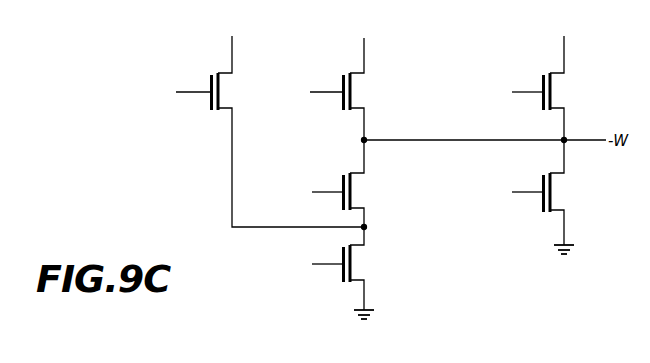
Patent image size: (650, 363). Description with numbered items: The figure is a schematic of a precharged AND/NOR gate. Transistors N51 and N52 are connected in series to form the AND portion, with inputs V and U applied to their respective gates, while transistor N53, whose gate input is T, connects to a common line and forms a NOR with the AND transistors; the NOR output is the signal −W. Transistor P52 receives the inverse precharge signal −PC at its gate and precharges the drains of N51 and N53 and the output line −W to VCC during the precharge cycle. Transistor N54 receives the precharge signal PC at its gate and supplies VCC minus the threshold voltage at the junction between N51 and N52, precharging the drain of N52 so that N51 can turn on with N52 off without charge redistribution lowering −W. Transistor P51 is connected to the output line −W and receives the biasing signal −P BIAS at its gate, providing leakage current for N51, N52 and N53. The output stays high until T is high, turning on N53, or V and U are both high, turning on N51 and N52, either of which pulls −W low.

The transistor N54 is at (257, 121).
The transistor P52 is at (333, 79).
The transistor P51 is at (517, 78).
The transistor N51 is at (344, 183).
The transistor N52 is at (344, 272).
The transistor N53 is at (545, 197).